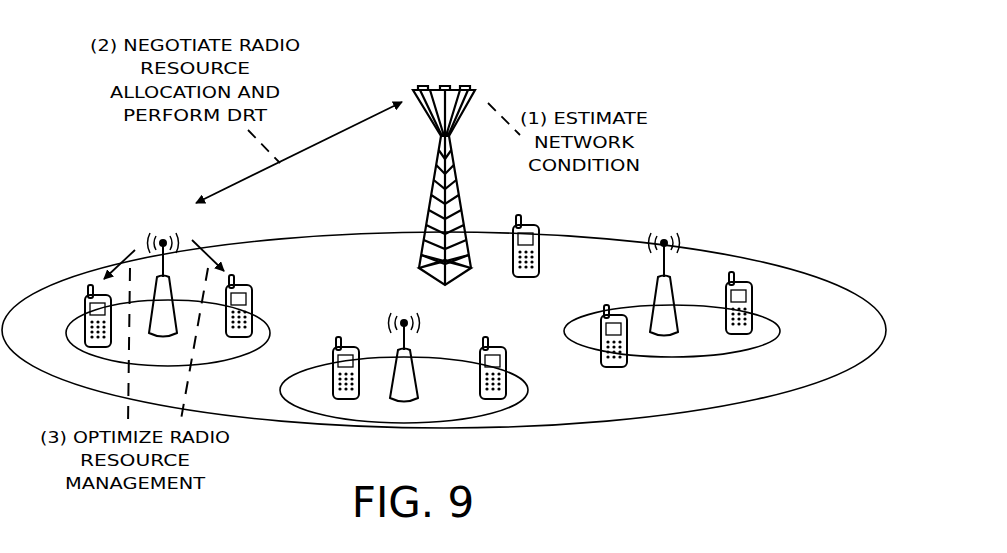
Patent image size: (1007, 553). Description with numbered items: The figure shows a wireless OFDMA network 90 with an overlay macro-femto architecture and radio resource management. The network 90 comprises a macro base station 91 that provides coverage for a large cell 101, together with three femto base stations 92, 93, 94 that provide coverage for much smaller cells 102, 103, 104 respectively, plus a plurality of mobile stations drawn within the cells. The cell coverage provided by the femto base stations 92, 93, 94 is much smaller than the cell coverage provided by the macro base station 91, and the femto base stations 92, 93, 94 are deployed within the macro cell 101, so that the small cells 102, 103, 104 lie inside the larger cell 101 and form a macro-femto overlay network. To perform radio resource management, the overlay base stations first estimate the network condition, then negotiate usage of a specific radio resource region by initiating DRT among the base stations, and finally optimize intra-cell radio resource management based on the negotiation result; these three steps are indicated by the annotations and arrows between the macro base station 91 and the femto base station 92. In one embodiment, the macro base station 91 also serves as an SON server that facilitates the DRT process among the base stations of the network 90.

The wireless OFDMA network 90 is at (814, 44).
The macro base station 91 is at (445, 173).
The femto base station 92 is at (168, 274).
The femto base station 93 is at (408, 346).
The femto base station 94 is at (672, 272).
The cell 101 is at (311, 276).
The cell 102 is at (152, 359).
The cell 103 is at (432, 412).
The cell 104 is at (687, 346).